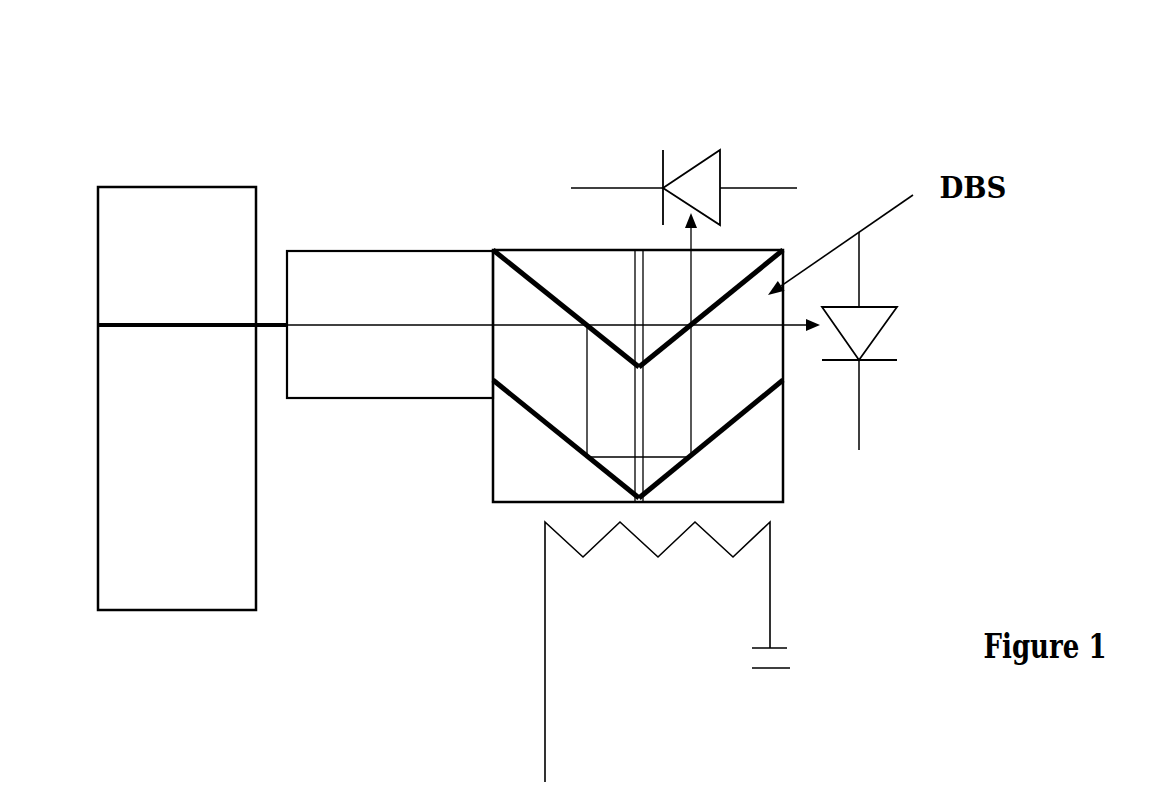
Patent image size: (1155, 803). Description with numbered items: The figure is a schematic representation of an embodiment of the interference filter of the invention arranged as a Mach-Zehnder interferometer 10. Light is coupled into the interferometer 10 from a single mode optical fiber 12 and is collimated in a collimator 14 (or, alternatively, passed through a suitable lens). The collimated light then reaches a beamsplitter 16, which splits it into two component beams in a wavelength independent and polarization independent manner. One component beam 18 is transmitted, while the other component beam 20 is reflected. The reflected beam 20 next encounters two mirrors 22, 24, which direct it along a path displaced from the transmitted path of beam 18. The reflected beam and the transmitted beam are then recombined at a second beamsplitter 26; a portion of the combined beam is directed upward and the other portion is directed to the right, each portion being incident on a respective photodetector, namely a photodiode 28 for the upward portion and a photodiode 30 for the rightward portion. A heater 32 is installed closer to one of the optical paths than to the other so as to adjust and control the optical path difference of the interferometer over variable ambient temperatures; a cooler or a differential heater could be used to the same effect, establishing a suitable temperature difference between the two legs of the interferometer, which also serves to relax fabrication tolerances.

The interferometer 10 is at (455, 106).
The single mode optical fiber 12 is at (164, 202).
The collimator 14 is at (362, 252).
The beamsplitter 16 is at (571, 236).
The transmitted component beam 18 is at (607, 320).
The reflected component beam 20 is at (587, 388).
The first mirror 22 is at (557, 438).
The second mirror 24 is at (730, 427).
The second beamsplitter 26 is at (757, 252).
The photodiode 28 is at (690, 163).
The photodiode 30 is at (900, 347).
The heater 32 is at (638, 555).